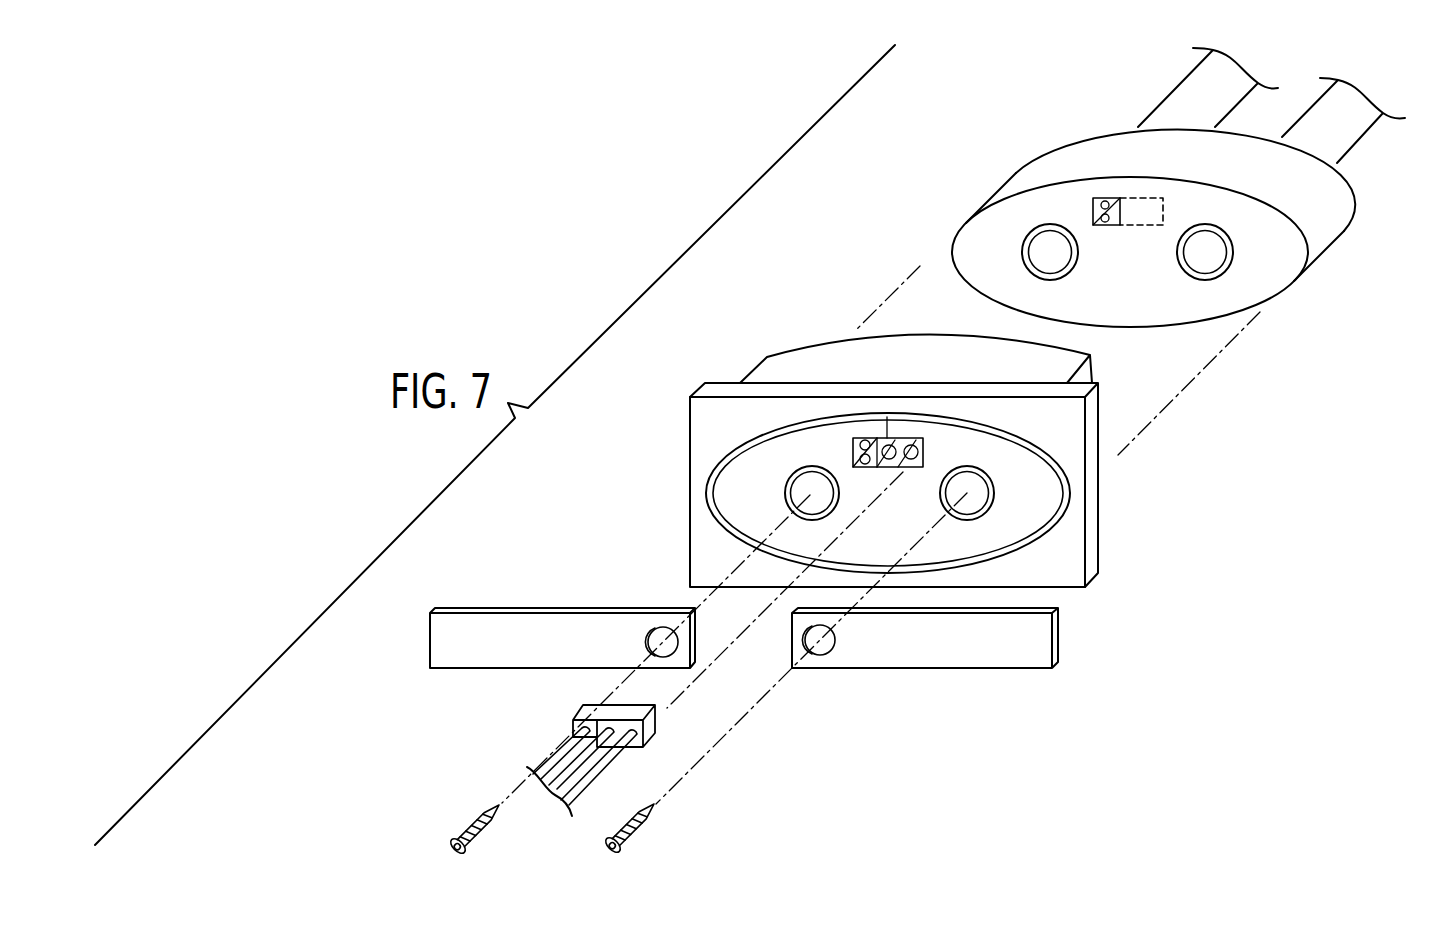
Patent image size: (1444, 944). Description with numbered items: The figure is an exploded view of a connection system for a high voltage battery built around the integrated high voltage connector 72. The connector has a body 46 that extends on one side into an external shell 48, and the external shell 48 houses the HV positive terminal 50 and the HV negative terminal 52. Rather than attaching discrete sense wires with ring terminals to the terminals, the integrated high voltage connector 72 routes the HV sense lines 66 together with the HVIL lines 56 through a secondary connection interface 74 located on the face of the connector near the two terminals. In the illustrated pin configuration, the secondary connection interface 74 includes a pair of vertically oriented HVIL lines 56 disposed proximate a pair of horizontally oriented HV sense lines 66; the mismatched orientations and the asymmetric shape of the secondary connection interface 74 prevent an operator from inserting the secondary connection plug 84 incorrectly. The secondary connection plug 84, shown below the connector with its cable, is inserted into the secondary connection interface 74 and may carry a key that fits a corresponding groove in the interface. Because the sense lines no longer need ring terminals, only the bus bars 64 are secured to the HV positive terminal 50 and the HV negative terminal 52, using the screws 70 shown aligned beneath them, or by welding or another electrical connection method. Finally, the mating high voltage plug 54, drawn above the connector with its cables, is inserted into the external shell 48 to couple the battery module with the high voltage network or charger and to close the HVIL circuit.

The body 46 is at (1100, 527).
The external shell 48 is at (803, 363).
The HV positive terminal 50 is at (807, 487).
The HV negative terminal 52 is at (967, 503).
The mating high voltage plug 54 is at (1340, 193).
The HVIL lines 56 is at (854, 435).
The bus bars 64 is at (430, 642).
The HV sense lines 66 is at (922, 462).
The screws 70 is at (475, 823).
The integrated high voltage connector 72 is at (1145, 475).
The secondary connection interface 74 is at (853, 455).
The secondary connection plug 84 is at (592, 713).